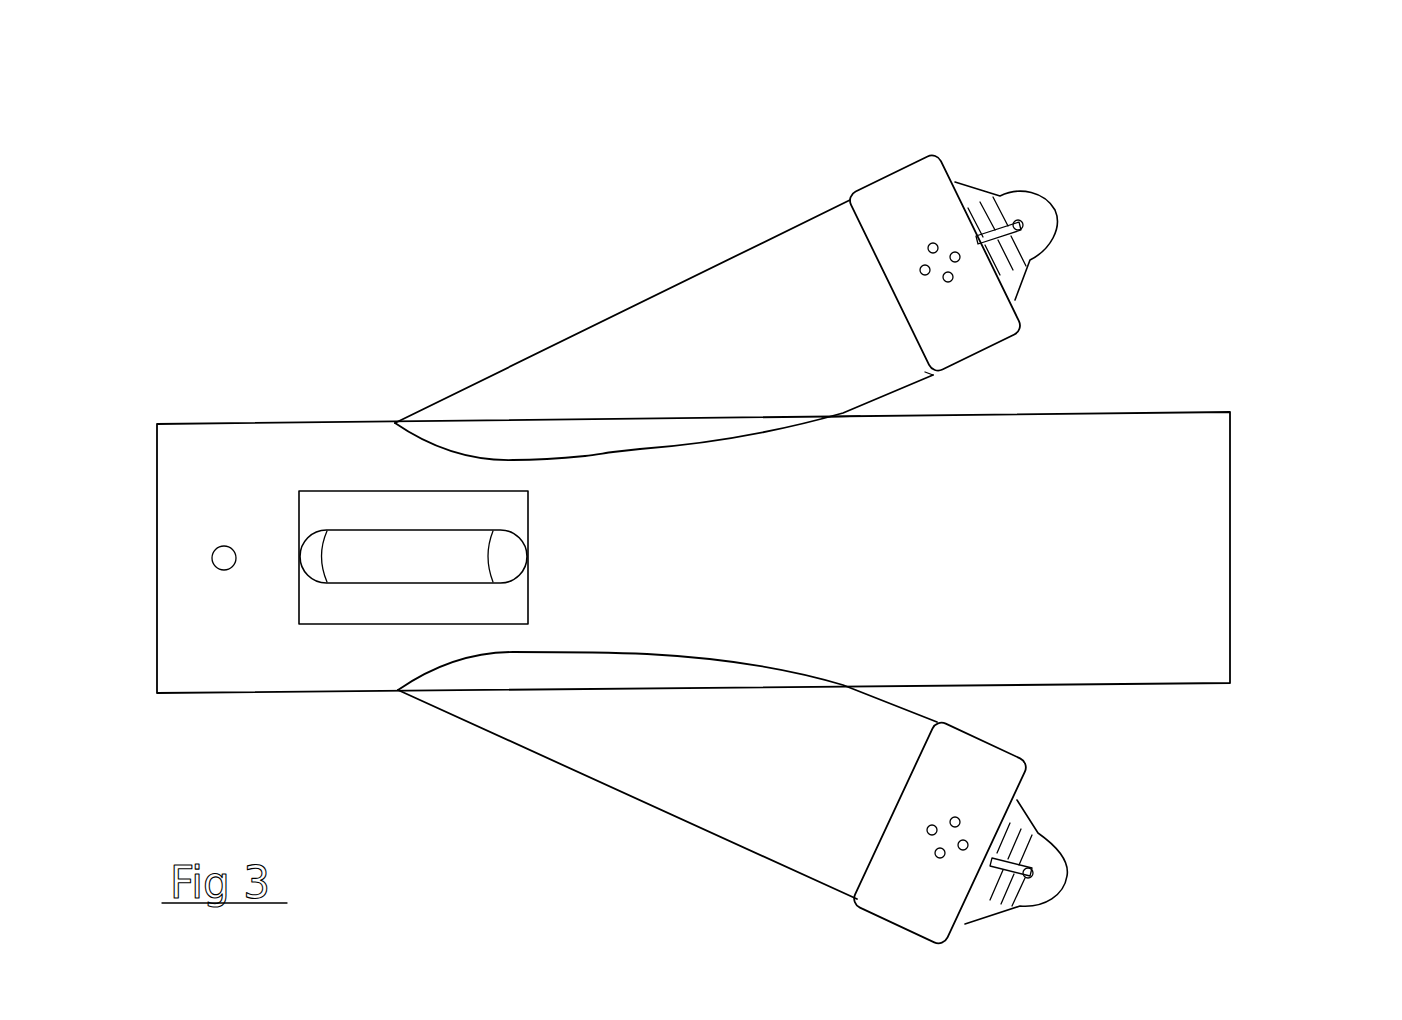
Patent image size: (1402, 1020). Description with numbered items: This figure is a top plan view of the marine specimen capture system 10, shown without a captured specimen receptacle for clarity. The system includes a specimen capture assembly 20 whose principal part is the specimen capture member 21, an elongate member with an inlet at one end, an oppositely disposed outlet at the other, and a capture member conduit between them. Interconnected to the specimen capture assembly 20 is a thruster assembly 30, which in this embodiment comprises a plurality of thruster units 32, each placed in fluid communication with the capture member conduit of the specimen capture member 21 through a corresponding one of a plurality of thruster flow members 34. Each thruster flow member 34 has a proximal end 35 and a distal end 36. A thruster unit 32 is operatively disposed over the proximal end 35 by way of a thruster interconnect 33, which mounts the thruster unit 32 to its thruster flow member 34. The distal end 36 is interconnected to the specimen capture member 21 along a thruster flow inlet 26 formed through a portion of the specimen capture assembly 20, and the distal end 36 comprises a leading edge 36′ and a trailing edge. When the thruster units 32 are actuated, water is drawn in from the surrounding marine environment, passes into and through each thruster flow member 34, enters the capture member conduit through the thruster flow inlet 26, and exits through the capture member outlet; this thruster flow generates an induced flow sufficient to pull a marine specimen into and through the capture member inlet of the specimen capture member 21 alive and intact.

The marine specimen capture system 10 is at (252, 136).
The specimen capture assembly 20 is at (1250, 378).
The specimen capture member 21 is at (1180, 554).
The thruster flow inlet 26 is at (683, 445).
The thruster assembly 30 is at (785, 163).
The thruster unit 32 is at (1058, 213).
The thruster interconnect 33 is at (1023, 327).
The thruster flow member 34 is at (647, 297).
The proximal end 35 is at (931, 376).
The distal end 36 is at (610, 453).
The leading edge 36′ is at (843, 413).